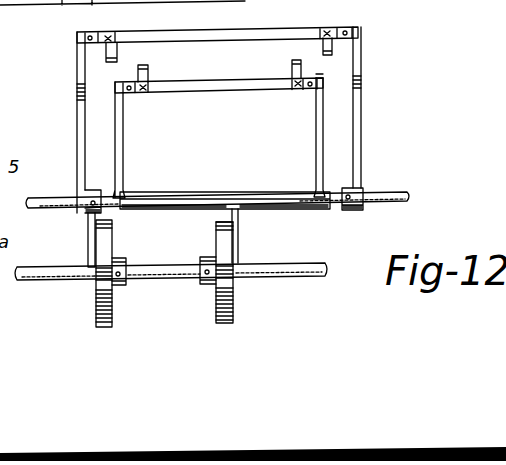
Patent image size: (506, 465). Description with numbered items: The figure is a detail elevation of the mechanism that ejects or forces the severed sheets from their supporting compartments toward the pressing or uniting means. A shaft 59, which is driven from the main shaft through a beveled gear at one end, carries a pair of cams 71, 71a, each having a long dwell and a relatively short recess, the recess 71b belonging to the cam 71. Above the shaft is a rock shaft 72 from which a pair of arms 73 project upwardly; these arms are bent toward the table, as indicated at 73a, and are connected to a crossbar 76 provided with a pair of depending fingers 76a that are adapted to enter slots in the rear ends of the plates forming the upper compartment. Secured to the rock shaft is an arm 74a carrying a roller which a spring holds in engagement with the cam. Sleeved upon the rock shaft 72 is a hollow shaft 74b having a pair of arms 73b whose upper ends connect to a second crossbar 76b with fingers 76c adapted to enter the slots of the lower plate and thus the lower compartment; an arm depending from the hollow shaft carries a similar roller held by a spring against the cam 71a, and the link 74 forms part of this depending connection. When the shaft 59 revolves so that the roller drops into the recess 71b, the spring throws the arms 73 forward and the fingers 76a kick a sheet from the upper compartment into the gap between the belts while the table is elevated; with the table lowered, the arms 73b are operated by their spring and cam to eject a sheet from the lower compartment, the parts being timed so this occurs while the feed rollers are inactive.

The crossbar 76 is at (163, 31).
The depending fingers 76a is at (110, 54).
The crossbar 76b is at (205, 86).
The fingers 76c is at (148, 74).
The arms 73 is at (359, 105).
The bent portion of arms 73a is at (77, 39).
The arms 73b is at (123, 152).
The rock shaft 72 is at (390, 194).
The left link 74 is at (88, 231).
The arm 74a is at (238, 240).
The hollow shaft 74b is at (177, 192).
The shaft 59 is at (306, 266).
The cam 71 is at (234, 302).
The cam 71a is at (112, 314).
The recess 71b is at (215, 245).